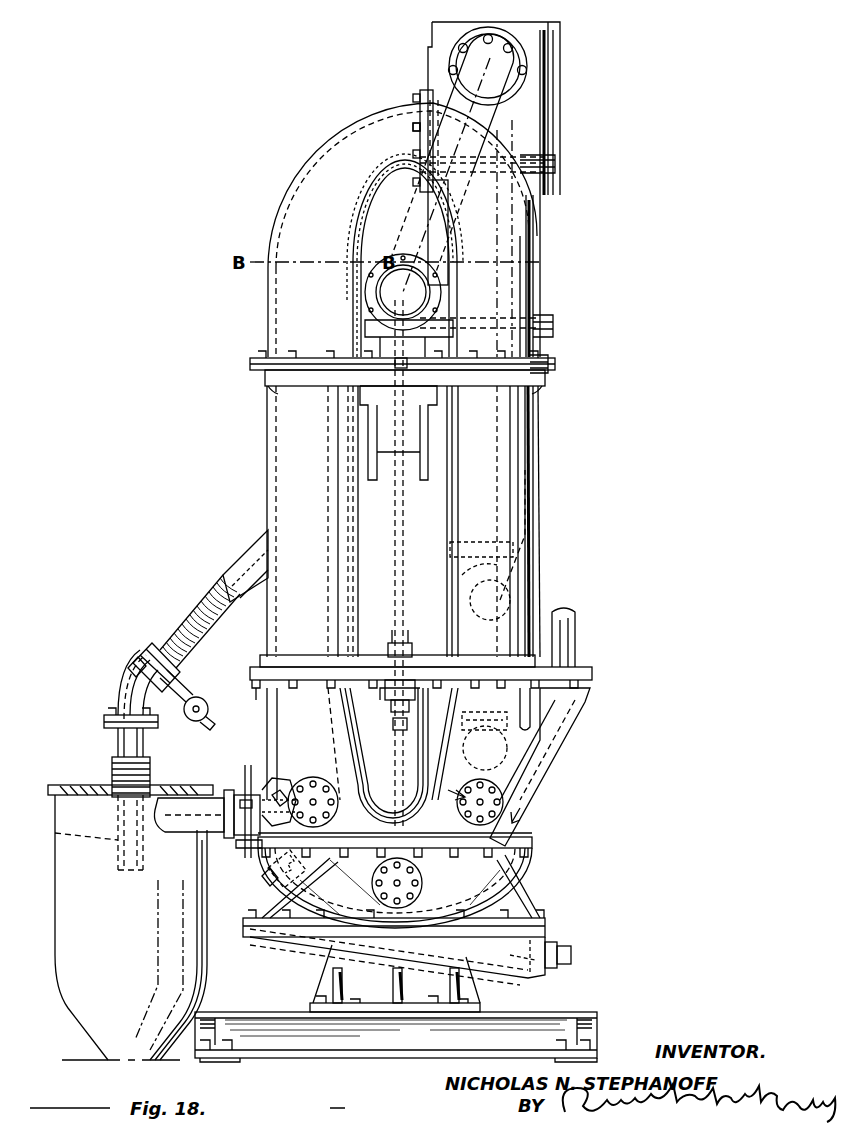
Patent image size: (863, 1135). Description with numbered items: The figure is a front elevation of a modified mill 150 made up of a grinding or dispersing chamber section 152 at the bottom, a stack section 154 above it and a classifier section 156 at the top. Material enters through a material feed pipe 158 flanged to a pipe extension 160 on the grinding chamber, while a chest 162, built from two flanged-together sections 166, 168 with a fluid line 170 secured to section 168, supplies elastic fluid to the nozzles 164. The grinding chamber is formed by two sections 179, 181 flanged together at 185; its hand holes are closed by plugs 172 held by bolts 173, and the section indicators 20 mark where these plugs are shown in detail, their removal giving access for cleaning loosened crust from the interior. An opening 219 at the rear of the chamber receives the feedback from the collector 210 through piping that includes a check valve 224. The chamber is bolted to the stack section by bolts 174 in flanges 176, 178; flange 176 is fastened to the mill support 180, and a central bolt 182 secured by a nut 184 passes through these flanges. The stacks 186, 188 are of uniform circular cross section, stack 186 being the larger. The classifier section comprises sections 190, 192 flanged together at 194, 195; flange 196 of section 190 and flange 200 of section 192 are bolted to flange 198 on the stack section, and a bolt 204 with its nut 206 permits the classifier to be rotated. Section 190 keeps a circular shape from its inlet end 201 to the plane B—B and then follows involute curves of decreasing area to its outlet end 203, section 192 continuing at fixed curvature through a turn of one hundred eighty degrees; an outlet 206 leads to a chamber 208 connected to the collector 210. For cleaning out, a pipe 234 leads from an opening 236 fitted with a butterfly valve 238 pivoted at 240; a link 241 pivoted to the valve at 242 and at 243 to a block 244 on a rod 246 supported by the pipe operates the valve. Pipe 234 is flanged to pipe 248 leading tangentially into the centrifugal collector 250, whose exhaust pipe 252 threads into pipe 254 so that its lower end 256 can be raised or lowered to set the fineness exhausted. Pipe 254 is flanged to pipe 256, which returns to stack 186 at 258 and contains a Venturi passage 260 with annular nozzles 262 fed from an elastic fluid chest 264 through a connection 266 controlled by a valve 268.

The section line 20- 20 is at (481, 793).
The modified mill 150 is at (546, 490).
The grinding or dispersing chamber section 152 is at (566, 878).
The stack section 154 is at (244, 463).
The classifier section 156 is at (248, 217).
The material feed pipe 158 is at (572, 640).
The pipe extension 160 is at (560, 728).
The chest 162 is at (508, 912).
The nozzles 164 is at (290, 890).
The chest section 166 is at (506, 898).
The chest section 168 is at (530, 974).
The fluid line 170 is at (572, 949).
The plugs 172 is at (332, 782).
The bolts 173 is at (403, 761).
The bolts 174 is at (256, 690).
The flange 176 is at (252, 666).
The flange 178 is at (256, 684).
The grinding chamber section 179 is at (278, 720).
The mill support 180 is at (424, 528).
The grinding chamber section 181 is at (500, 882).
The bolt 182 is at (402, 645).
The nut 184 is at (394, 716).
The flange joint 185 is at (540, 833).
The stack 186 is at (280, 485).
The stack 188 is at (515, 456).
The classifier section 190 is at (340, 150).
The classifier section 192 is at (515, 229).
The flange 194 is at (424, 94).
The flange 195 is at (419, 376).
The flange 196 is at (256, 363).
The flange 198 is at (262, 378).
The flange 200 is at (548, 362).
The inlet end 201 is at (312, 360).
The outlet end 203 is at (418, 134).
The bolt 204 is at (409, 305).
The nut 206 is at (448, 259).
The chamber 208 is at (362, 197).
The collector 210 is at (548, 126).
The opening 219 is at (504, 740).
The check valve 224 is at (513, 88).
The pipe 234 is at (230, 800).
The opening 236 is at (268, 782).
The butterfly valve 238 is at (276, 796).
The pivot 240 is at (268, 872).
The link 241 is at (245, 805).
The pivot 242 is at (279, 792).
The pivot 243 is at (247, 798).
The block 244 is at (241, 788).
The rod 246 is at (252, 848).
The pipe 248 is at (182, 805).
The collector 250 is at (63, 882).
The exhaust pipe 252 is at (65, 835).
The pipe 254 is at (111, 770).
The pipe 256 is at (128, 700).
The connection 258 is at (262, 551).
The Venturi passage 260 is at (196, 614).
The nozzles 262 is at (156, 648).
The elastic fluid chest 264 is at (136, 660).
The connection 266 is at (190, 690).
The valve 268 is at (190, 714).